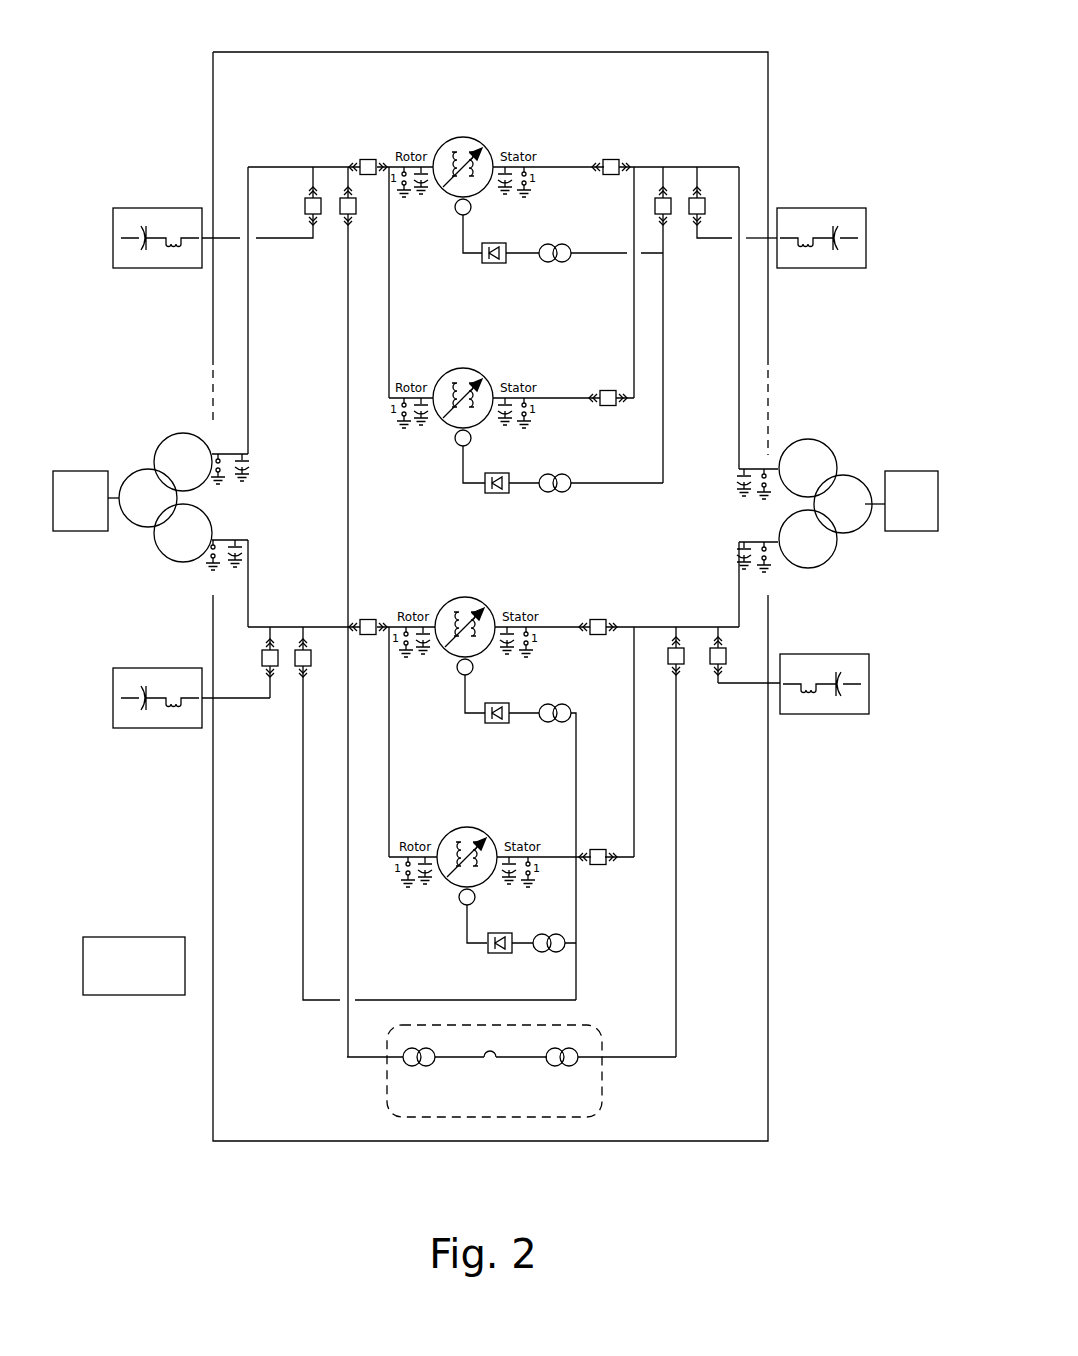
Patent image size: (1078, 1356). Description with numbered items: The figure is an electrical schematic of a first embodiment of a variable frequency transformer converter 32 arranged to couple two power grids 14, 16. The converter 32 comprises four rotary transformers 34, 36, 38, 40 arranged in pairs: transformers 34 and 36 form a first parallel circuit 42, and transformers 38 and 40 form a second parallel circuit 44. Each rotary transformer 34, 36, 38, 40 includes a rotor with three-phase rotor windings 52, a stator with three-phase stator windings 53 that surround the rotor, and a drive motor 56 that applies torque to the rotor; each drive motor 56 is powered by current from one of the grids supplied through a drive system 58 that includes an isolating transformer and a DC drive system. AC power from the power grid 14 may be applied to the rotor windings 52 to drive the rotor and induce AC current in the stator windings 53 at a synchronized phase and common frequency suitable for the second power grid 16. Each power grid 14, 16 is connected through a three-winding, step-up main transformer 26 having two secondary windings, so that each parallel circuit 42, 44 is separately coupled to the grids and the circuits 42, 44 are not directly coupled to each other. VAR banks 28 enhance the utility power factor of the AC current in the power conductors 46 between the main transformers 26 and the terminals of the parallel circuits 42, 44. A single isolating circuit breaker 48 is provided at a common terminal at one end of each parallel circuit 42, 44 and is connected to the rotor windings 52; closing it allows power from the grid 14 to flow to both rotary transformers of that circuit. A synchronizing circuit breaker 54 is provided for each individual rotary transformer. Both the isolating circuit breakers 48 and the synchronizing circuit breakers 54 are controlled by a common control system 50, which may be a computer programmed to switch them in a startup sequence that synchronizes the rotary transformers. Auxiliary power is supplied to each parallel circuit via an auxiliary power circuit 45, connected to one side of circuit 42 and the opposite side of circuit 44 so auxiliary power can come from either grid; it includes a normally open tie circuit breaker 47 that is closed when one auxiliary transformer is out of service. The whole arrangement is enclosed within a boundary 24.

The power grid 14 is at (80, 472).
The power grid 16 is at (898, 470).
The power system enclosure 24 is at (652, 52).
The main transformer 26 is at (180, 563).
The VAR bank 28 is at (180, 208).
The variable frequency transformer converter 32 is at (710, 822).
The rotary transformer 34 is at (485, 150).
The rotary transformer 36 is at (487, 382).
The rotary transformer 38 is at (487, 610).
The rotary transformer 40 is at (490, 840).
The first parallel circuit 42 is at (493, 540).
The second parallel circuit 44 is at (493, 722).
The auxiliary power circuit 45 is at (511, 1100).
The power conductor 46 is at (270, 165).
The tie circuit breaker 47 is at (491, 1066).
The isolating circuit breaker 48 is at (368, 158).
The control system 50 is at (148, 996).
The rotor windings 52 is at (445, 168).
The stator windings 53 is at (458, 160).
The synchronizing circuit breaker 54 is at (610, 158).
The drive motor 56 is at (458, 213).
The drive system 58 is at (527, 260).